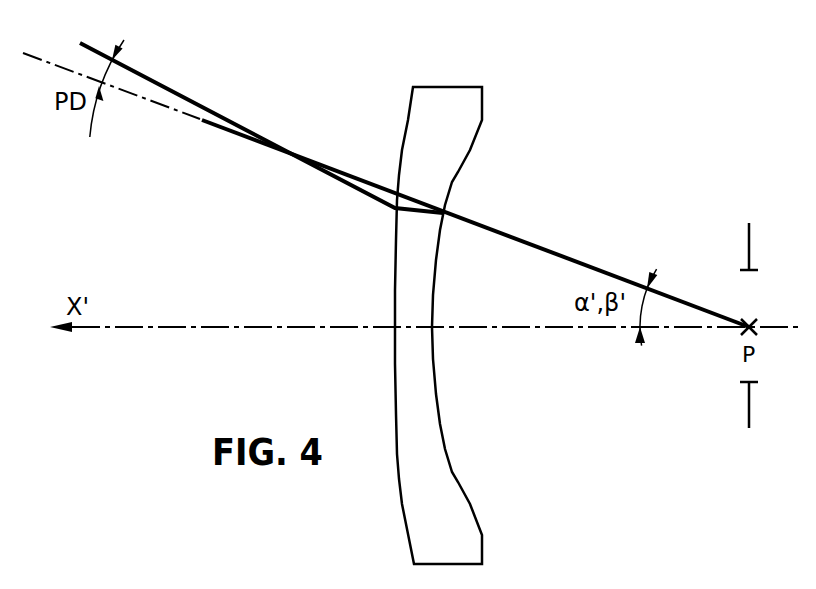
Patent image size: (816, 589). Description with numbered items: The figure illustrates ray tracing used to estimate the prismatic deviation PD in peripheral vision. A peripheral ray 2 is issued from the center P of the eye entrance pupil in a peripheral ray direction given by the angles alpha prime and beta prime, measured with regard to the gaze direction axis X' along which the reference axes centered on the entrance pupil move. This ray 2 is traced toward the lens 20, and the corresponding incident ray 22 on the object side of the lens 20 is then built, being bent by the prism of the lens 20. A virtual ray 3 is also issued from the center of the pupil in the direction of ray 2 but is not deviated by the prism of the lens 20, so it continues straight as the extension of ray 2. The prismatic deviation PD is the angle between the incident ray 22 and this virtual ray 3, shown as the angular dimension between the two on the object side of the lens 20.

The peripheral ray 2 is at (557, 252).
The virtual ray 3 is at (175, 113).
The lens 20 is at (450, 87).
The incident ray 22 is at (180, 92).